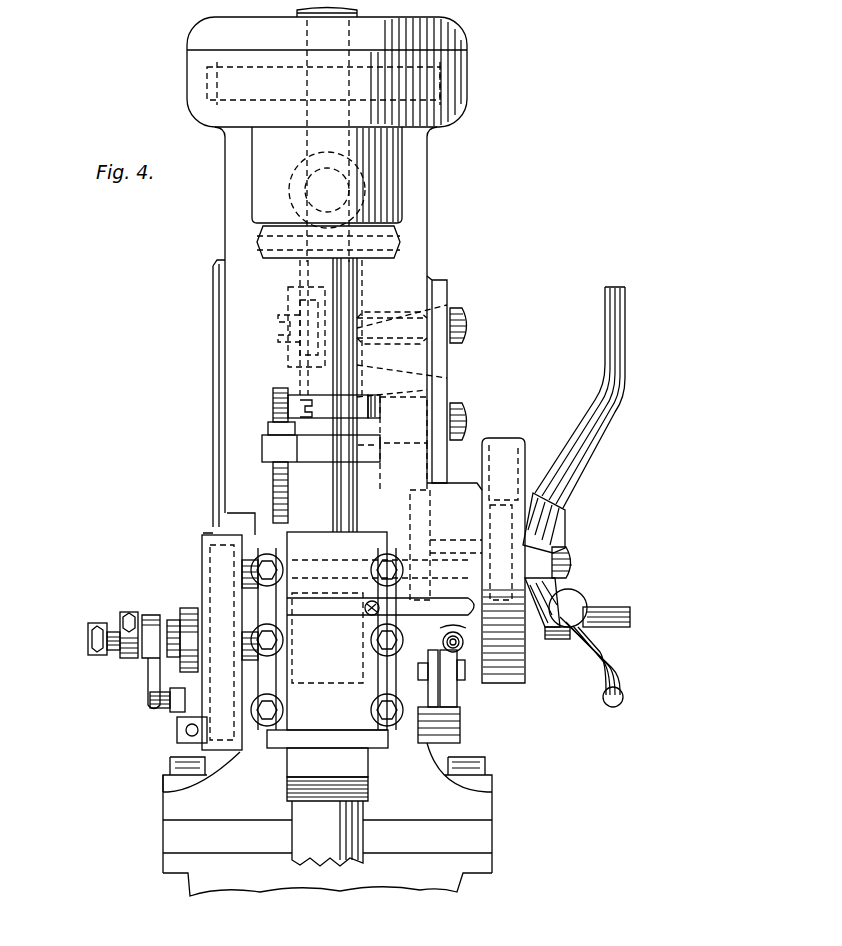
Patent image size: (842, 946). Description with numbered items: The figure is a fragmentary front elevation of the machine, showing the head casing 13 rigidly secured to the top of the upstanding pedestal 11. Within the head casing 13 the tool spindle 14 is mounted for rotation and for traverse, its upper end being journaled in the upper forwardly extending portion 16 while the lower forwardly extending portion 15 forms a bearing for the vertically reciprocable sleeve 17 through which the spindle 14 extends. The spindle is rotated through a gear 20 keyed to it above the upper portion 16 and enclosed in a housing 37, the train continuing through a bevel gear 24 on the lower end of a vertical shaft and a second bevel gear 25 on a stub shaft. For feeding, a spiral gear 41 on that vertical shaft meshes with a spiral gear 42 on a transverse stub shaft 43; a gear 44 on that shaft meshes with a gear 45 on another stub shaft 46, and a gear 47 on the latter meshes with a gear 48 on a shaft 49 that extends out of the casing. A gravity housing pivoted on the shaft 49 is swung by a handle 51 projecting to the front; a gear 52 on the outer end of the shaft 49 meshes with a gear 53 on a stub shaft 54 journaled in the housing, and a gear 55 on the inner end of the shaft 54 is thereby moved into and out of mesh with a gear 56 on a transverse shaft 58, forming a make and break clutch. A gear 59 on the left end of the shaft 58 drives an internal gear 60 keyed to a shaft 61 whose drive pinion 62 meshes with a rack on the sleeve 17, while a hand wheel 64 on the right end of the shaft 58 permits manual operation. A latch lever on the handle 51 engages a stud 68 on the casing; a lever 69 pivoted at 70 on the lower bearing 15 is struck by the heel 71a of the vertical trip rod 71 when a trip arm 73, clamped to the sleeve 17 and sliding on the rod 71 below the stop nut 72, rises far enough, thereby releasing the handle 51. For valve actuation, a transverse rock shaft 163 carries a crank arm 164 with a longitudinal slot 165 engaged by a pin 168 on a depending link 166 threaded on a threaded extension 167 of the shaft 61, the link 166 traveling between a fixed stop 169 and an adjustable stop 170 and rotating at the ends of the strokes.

The upstanding column or pedestal 11 is at (442, 875).
The head casing 13 is at (460, 808).
The tool spindle 14 is at (318, 366).
The lower forwardly extending portion 15 is at (330, 745).
The upper forwardly extending portion 16 is at (402, 144).
The vertically reciprocable sleeve 17 is at (333, 762).
The gear 20 is at (207, 88).
The bevel gear 24 is at (400, 240).
The second bevel gear 25 is at (355, 193).
The housing 37 is at (468, 74).
The spiral gear 41 is at (290, 298).
The spiral gear 42 is at (290, 352).
The transverse stub shaft 43 is at (445, 292).
The gear 44 is at (357, 308).
The gear 45 is at (357, 340).
The stub shaft 46 is at (430, 413).
The gear 47 is at (380, 398).
The gear 48 is at (428, 455).
The shaft 49 is at (510, 445).
The handle 51 is at (460, 655).
The gear 52 is at (515, 478).
The gear 53 is at (560, 528).
The stub shaft 54 is at (462, 652).
The gear 55 is at (430, 572).
The gear 56 is at (372, 458).
The transverse shaft 58 is at (575, 565).
The gear 59 is at (212, 565).
The internal gear 60 is at (222, 750).
The shaft 61 is at (242, 650).
The drive pinion 62 is at (310, 690).
The hand wheel 64 is at (628, 385).
The stud 68 is at (460, 735).
The lever 69 is at (300, 545).
The pivot 70 is at (367, 603).
The vertical trip rod 71 is at (273, 481).
The heel or lug 71a is at (285, 630).
The stop nut 72 is at (272, 428).
The trip arm 73 is at (262, 449).
The transverse rock shaft 163 is at (177, 753).
The crank arm 164 is at (180, 720).
The longitudinal slot 165 is at (167, 708).
The depending link 166 is at (200, 662).
The threaded extension 167 is at (120, 630).
The pin 168 is at (157, 692).
The fixed stop 169 is at (158, 612).
The adjustable stop 170 is at (92, 657).